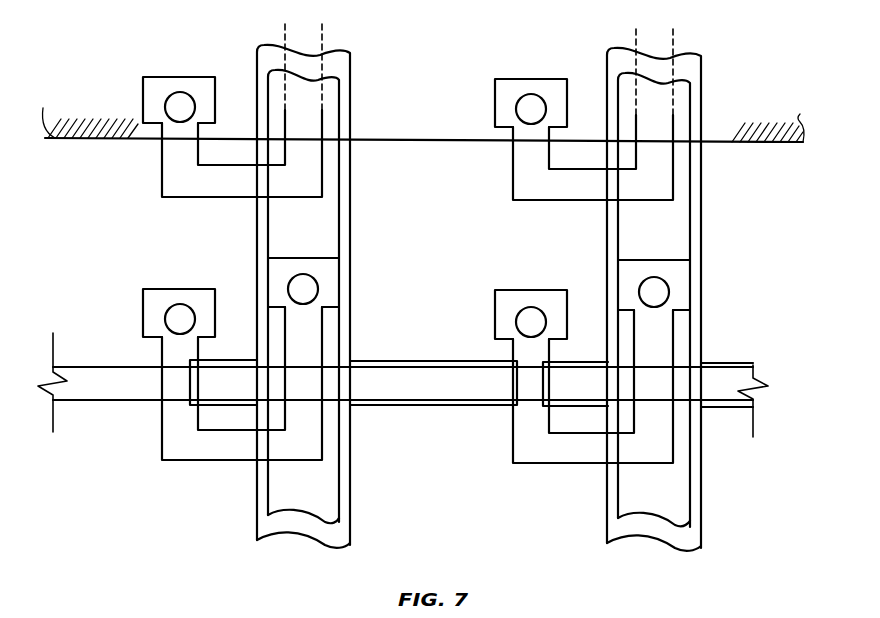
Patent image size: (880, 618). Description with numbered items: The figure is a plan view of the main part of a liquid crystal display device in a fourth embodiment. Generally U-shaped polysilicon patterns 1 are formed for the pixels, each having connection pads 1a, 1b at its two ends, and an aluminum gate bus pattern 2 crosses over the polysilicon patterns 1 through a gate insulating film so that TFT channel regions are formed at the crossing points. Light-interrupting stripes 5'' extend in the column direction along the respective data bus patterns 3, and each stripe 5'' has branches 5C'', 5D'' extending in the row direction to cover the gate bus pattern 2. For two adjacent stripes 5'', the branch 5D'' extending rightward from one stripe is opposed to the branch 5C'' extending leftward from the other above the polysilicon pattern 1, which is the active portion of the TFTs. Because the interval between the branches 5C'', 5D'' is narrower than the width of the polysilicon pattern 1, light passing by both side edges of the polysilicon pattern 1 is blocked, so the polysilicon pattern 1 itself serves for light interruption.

The polysilicon pattern 1 is at (198, 198).
The connection pad 1a is at (162, 76).
The connection pad 1b is at (330, 283).
The gate bus pattern 2 is at (100, 140).
The data bus pattern 3 is at (339, 226).
The light-interrupting stripe 5'' is at (505, 515).
The branch 5C'' is at (381, 447).
The branch 5D'' is at (568, 388).